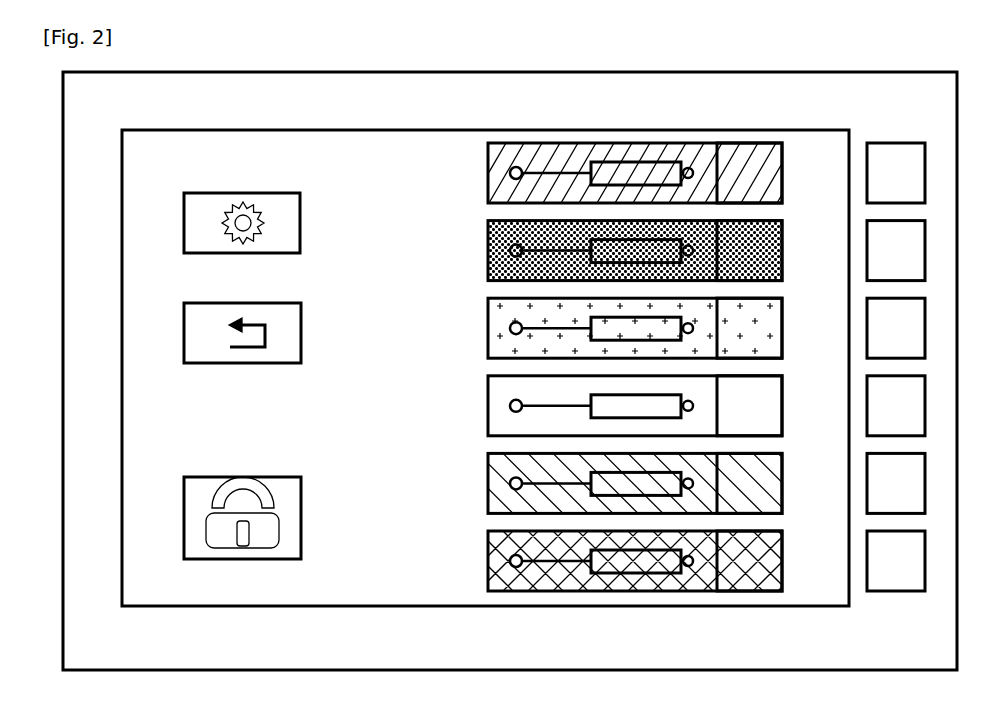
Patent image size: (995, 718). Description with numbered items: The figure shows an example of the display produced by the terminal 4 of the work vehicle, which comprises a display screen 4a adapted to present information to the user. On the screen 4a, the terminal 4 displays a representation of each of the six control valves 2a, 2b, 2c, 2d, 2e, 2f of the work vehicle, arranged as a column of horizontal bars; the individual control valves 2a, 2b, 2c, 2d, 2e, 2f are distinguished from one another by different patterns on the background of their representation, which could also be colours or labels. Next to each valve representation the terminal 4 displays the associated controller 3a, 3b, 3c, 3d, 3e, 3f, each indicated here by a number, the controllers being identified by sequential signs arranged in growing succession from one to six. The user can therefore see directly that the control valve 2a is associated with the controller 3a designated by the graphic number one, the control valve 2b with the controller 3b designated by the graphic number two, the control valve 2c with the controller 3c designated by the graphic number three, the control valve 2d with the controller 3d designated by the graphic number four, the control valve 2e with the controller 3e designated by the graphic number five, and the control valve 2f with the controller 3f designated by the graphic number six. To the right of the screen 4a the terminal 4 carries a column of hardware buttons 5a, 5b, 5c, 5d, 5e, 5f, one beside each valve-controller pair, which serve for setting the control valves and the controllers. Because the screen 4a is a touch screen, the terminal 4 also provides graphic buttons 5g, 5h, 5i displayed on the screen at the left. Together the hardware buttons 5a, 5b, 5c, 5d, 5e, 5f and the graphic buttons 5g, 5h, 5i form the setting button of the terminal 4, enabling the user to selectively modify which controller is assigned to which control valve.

The terminal 4 is at (88, 104).
The display screen 4a is at (163, 163).
The control valve 2a is at (488, 173).
The control valve 2b is at (488, 250).
The control valve 2c is at (488, 328).
The control valve 2d is at (488, 405).
The control valve 2e is at (488, 483).
The control valve 2f is at (488, 561).
The controller 3a is at (782, 172).
The controller 3b is at (782, 250).
The controller 3c is at (782, 327).
The controller 3d is at (782, 405).
The controller 3e is at (782, 482).
The controller 3f is at (782, 560).
The hardware button 5a is at (883, 185).
The hardware button 5b is at (883, 263).
The hardware button 5c is at (883, 340).
The hardware button 5d is at (883, 418).
The hardware button 5e is at (883, 495).
The hardware button 5f is at (883, 573).
The graphic button 5g is at (300, 207).
The graphic button 5h is at (300, 322).
The graphic button 5i is at (300, 510).